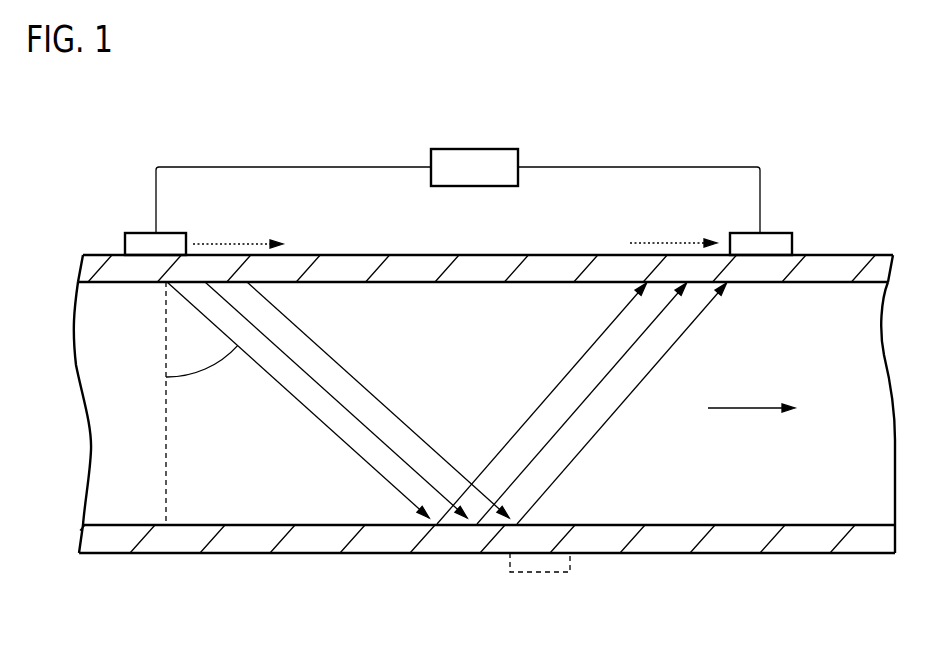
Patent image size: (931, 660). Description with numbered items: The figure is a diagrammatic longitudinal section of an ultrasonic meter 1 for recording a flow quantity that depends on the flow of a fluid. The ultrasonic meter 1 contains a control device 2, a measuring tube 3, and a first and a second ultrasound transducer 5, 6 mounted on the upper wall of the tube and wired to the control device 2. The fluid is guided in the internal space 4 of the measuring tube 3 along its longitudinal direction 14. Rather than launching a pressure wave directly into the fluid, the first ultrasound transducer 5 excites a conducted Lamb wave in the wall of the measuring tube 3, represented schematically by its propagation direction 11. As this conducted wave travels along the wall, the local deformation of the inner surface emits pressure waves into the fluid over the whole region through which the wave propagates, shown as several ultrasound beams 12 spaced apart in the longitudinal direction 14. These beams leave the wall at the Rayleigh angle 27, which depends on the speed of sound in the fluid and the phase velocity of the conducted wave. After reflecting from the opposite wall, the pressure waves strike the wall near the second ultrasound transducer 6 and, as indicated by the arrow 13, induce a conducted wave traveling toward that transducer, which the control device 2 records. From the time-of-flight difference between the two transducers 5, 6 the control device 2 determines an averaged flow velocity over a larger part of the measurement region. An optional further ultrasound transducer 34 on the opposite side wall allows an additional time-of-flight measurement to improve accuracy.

The ultrasonic meter 1 is at (650, 93).
The control device 2 is at (473, 148).
The measuring tube 3 is at (650, 538).
The internal space 4 is at (117, 490).
The first ultrasound transducer 5 is at (142, 232).
The second ultrasound transducer 6 is at (770, 232).
The propagation direction 11 is at (230, 240).
The ultrasound beam 12 is at (363, 385).
The arrow 13 is at (662, 240).
The longitudinal direction 14 is at (738, 410).
The Rayleigh angle 27 is at (198, 370).
The further ultrasound transducer 34 is at (542, 575).